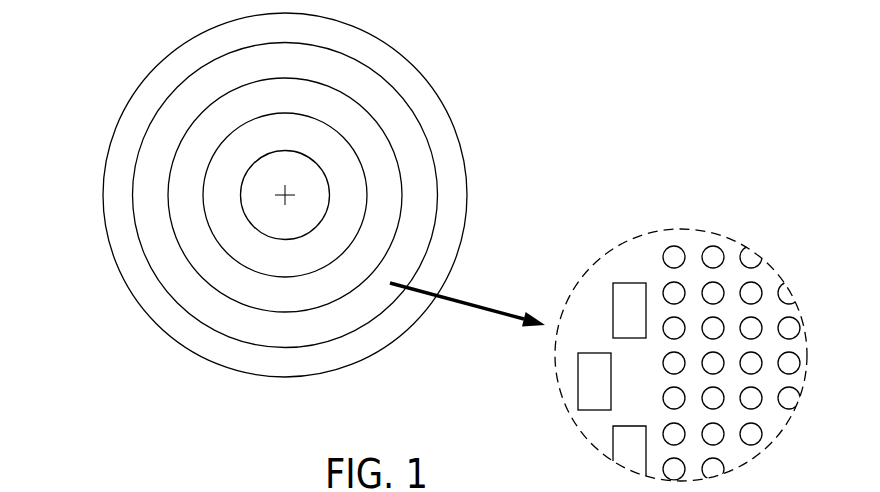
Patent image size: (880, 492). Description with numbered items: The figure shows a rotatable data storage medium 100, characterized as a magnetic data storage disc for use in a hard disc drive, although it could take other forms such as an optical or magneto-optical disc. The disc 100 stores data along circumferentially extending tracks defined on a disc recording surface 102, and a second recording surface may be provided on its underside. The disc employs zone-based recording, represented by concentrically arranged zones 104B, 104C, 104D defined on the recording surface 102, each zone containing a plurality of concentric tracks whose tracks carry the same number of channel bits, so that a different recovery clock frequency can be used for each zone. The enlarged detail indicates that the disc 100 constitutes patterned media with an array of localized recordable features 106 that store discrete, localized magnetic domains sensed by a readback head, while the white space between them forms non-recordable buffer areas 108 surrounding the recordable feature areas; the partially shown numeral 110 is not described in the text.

The rotatable data storage medium 100 is at (127, 36).
The disc recording surface 102 is at (438, 84).
The zone 104B is at (212, 313).
The zone 104C is at (197, 252).
The zone 104D is at (217, 215).
The localized recordable features 106 is at (672, 248).
The non-recordable buffer areas 108 is at (639, 257).
The substrate 110 is at (122, 491).